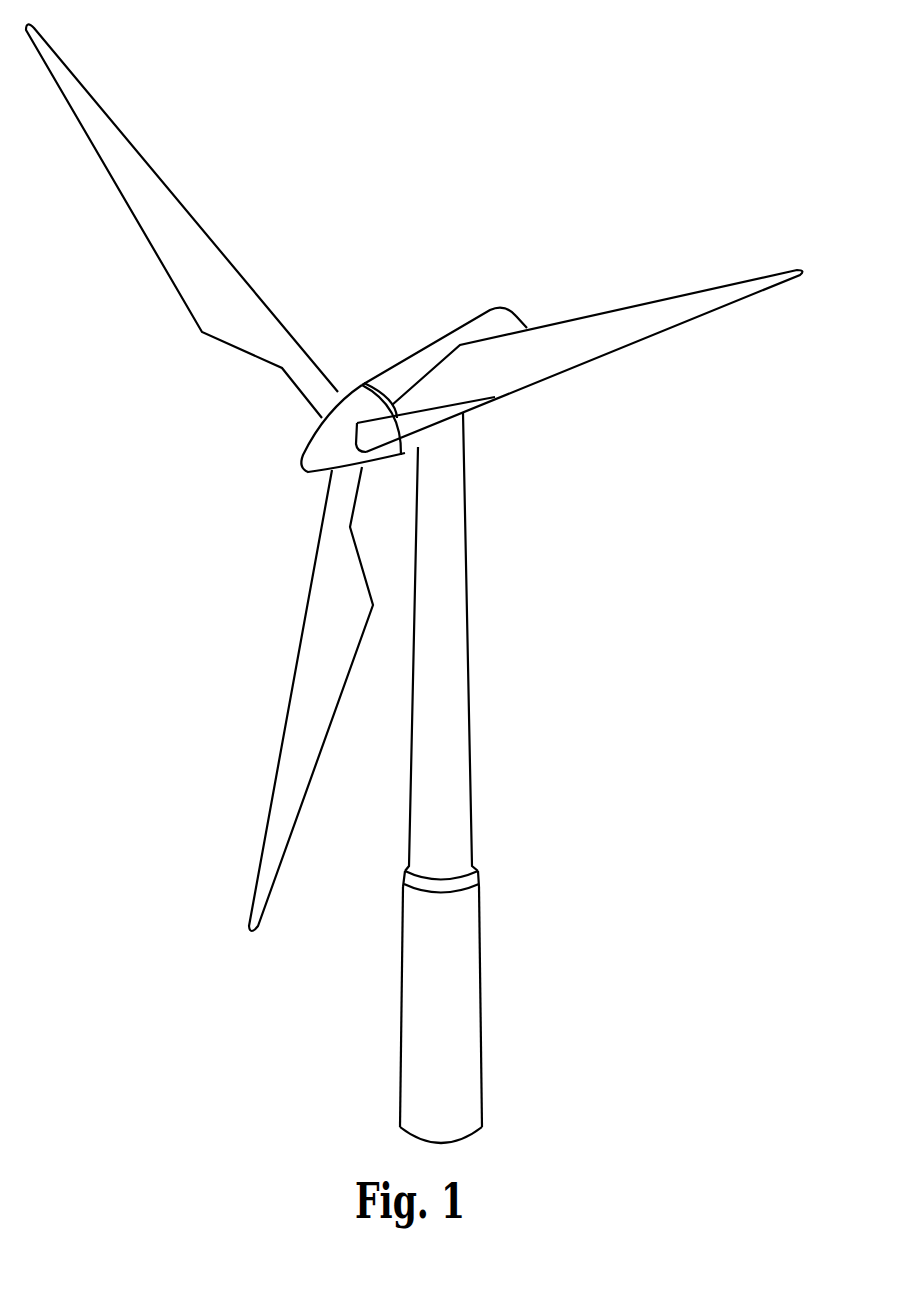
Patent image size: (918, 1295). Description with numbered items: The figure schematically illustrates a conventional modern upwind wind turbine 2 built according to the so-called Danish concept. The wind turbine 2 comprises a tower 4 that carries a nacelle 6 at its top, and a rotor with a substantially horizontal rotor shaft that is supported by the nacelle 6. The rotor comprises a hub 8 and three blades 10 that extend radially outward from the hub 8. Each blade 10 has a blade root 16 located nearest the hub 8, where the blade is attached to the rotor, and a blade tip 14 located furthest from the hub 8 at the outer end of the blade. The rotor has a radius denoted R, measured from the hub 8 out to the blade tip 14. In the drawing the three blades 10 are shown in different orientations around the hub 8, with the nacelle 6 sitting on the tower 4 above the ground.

The wind turbine 2 is at (566, 722).
The tower 4 is at (460, 650).
The nacelle 6 is at (405, 368).
The hub 8 is at (320, 447).
The blade 10 is at (215, 305).
The blade tip 14 is at (68, 78).
The blade root 16 is at (318, 418).